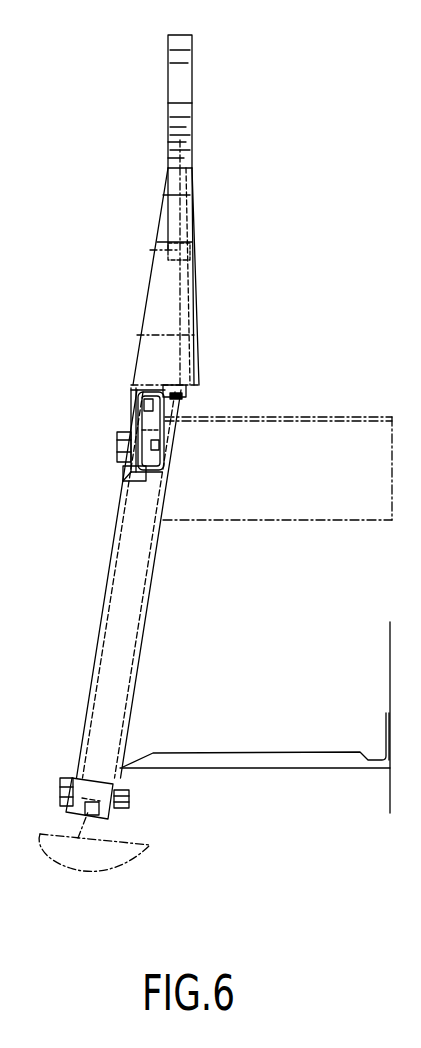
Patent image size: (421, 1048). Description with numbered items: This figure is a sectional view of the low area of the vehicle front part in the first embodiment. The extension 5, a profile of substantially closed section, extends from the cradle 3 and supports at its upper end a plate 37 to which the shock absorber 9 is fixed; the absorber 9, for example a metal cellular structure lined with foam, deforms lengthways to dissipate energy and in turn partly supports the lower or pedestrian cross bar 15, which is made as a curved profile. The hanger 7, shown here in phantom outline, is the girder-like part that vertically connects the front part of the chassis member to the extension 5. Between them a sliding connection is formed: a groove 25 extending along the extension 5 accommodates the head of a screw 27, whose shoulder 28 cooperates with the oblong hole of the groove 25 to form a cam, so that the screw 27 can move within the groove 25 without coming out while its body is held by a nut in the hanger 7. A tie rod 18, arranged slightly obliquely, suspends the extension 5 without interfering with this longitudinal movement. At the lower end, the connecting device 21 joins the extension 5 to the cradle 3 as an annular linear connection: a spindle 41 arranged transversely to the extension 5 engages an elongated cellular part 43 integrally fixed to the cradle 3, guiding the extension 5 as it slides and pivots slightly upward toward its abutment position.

The lower bumper cross bar 15 is at (192, 85).
The shock absorber 9 is at (197, 293).
The plate 37 is at (166, 384).
The hanger 7 is at (330, 428).
The groove 25 is at (165, 440).
The screw 27 is at (117, 447).
The shoulder 28 is at (128, 472).
The extension 5 is at (140, 643).
The tie rod 18 is at (253, 753).
The connecting device 21 is at (48, 788).
The spindle 41 is at (98, 786).
The cradle 3 is at (135, 858).
The elongated cellular part 43 is at (100, 822).